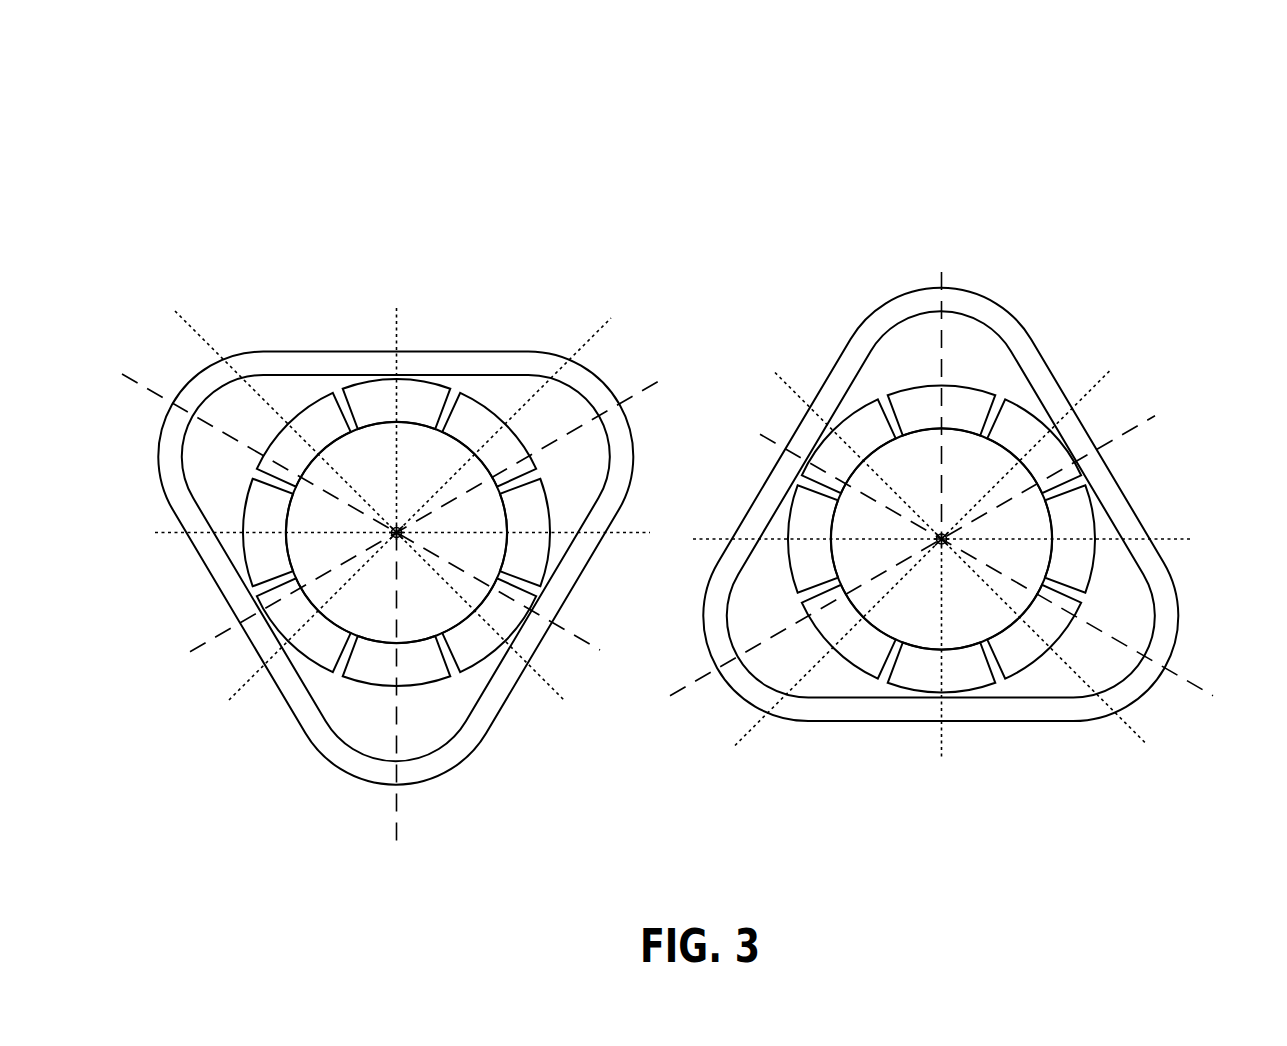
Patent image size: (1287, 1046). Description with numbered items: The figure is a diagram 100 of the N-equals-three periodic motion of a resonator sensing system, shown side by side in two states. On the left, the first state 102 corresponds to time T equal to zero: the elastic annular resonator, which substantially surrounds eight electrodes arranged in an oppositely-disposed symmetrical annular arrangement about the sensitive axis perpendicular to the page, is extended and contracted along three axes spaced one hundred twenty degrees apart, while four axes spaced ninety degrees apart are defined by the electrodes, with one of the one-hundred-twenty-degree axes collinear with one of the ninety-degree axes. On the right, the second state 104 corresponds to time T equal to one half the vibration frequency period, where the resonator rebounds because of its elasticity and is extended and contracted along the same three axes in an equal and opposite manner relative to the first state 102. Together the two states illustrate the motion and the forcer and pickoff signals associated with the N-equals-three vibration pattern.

The diagram 100 is at (182, 74).
The first state 102 is at (396, 224).
The second state 104 is at (942, 224).